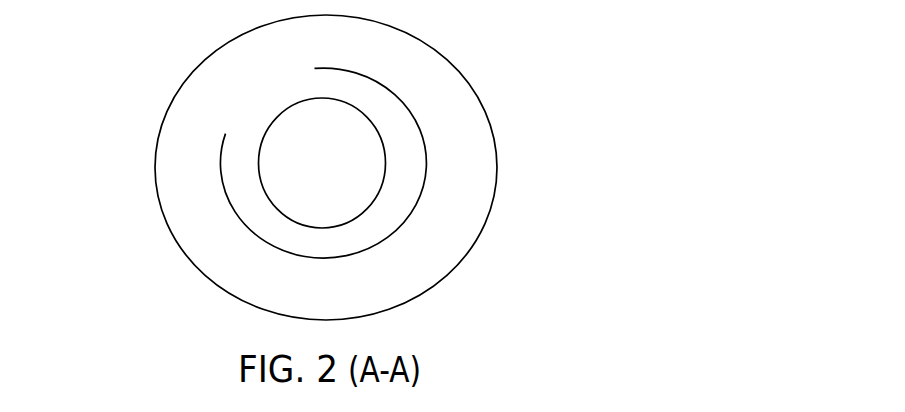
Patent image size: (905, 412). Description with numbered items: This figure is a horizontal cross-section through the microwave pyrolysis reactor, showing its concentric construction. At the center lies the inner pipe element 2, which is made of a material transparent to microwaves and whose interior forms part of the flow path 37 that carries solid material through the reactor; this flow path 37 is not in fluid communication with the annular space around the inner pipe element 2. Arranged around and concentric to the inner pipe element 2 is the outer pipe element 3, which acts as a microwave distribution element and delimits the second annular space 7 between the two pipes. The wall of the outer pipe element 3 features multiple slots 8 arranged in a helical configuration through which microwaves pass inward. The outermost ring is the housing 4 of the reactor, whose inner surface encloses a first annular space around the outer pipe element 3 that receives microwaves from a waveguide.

The inner pipe element 2 is at (262, 188).
The outer pipe element 3 is at (425, 172).
The housing 4 is at (455, 72).
The second annular space 7 is at (267, 218).
The slots 8 is at (250, 105).
The flow path 37 is at (326, 171).